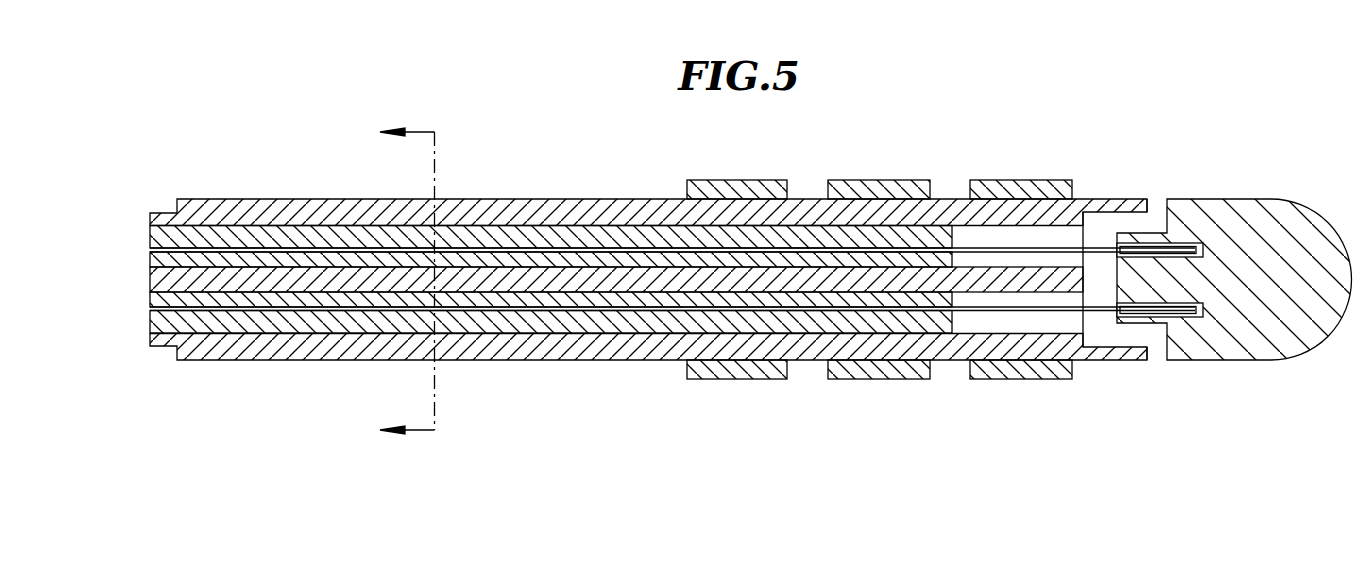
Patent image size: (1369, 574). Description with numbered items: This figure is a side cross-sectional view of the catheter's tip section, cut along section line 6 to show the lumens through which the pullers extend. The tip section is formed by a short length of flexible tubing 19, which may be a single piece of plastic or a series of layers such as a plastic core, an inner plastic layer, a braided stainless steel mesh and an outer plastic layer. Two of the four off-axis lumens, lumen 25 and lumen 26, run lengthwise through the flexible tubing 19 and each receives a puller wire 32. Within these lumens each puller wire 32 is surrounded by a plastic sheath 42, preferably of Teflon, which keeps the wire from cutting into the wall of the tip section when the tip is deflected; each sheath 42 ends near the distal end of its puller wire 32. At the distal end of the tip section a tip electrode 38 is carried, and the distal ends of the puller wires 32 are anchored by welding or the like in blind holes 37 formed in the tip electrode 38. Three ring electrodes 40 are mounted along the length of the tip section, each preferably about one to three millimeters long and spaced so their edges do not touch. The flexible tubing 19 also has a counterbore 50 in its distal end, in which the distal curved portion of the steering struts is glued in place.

The section line 6- 6 is at (395, 282).
The flexible tubing 19 is at (627, 347).
The off-axis lumen 25 is at (150, 294).
The off-axis lumen 26 is at (150, 225).
The puller wire 32 is at (483, 247).
The blind hole 37 is at (1177, 240).
The tip electrode 38 is at (1257, 250).
The ring electrode 40 is at (870, 180).
The plastic sheath 42 is at (565, 237).
The counterbore 50 is at (1127, 333).